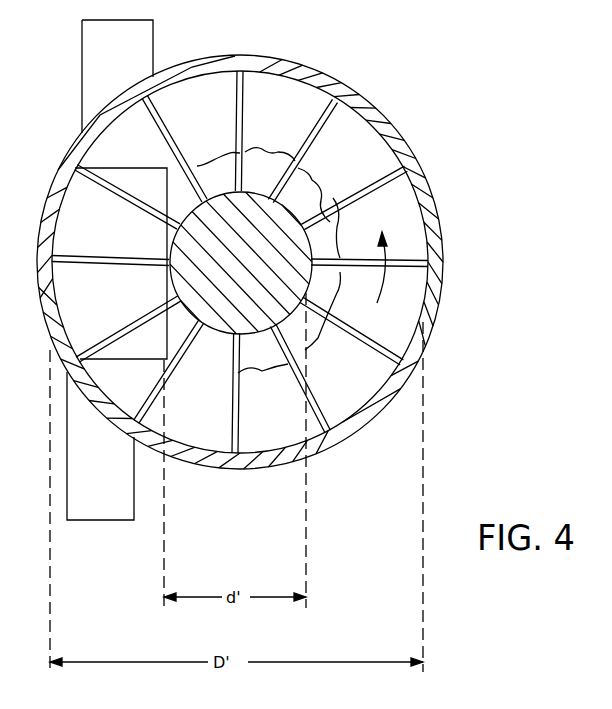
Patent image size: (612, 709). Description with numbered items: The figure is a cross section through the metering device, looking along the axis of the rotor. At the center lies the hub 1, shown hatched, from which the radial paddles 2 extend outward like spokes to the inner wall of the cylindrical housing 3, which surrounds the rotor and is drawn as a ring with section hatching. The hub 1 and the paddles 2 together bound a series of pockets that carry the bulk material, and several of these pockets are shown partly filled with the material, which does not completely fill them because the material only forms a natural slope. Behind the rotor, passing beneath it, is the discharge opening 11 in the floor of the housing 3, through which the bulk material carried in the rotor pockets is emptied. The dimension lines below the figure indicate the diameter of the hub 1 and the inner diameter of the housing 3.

The hub 1 is at (278, 230).
The radial paddles 2 is at (395, 194).
The cylindrical housing 3 is at (435, 228).
The discharge opening 11 is at (70, 231).